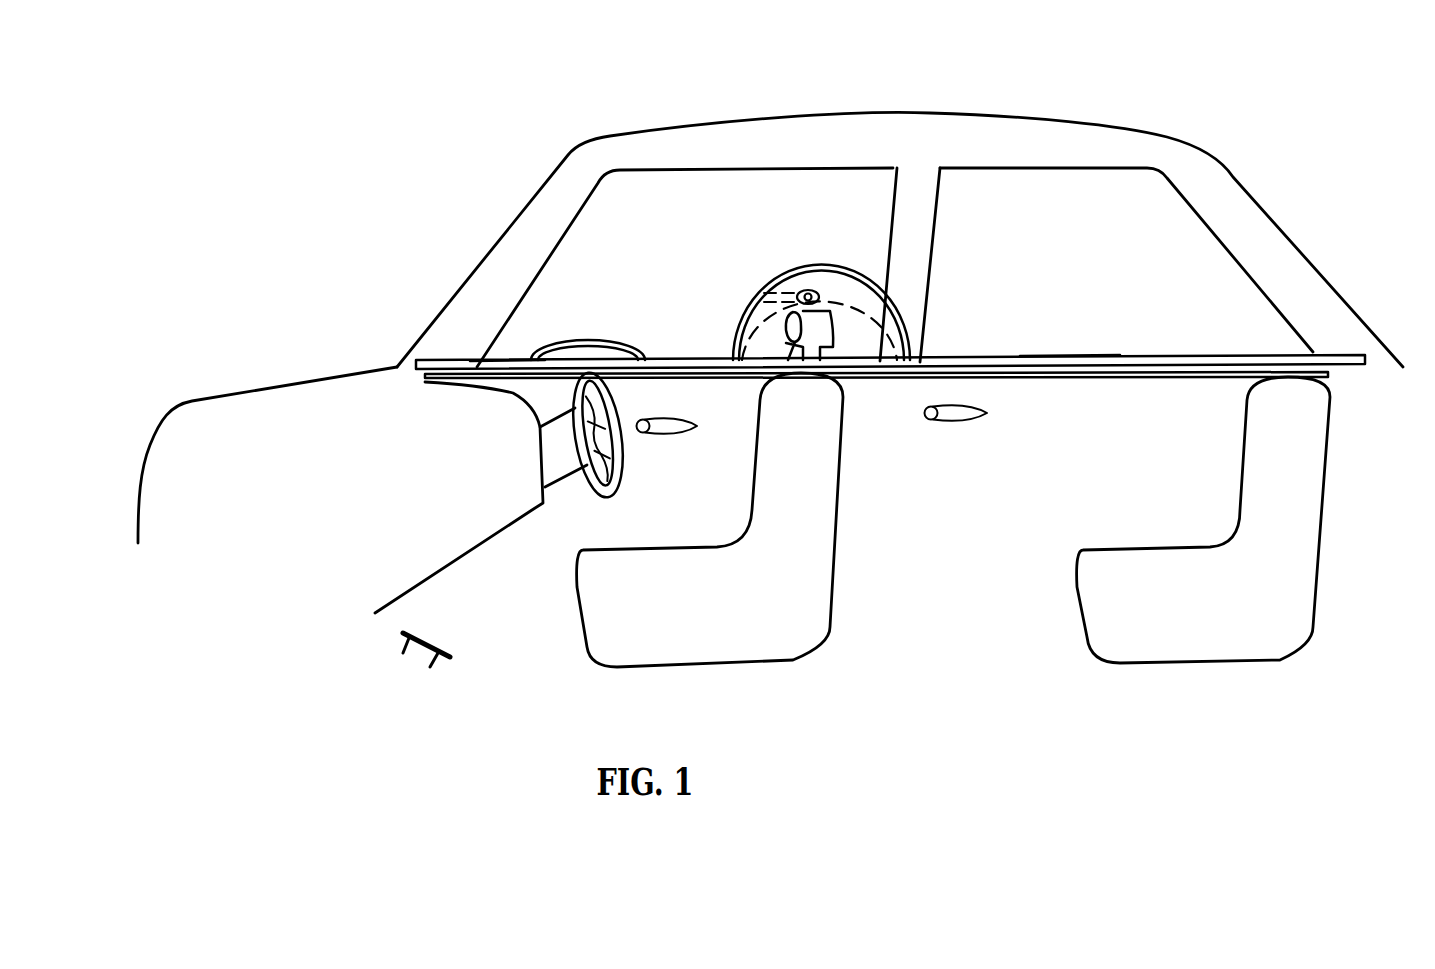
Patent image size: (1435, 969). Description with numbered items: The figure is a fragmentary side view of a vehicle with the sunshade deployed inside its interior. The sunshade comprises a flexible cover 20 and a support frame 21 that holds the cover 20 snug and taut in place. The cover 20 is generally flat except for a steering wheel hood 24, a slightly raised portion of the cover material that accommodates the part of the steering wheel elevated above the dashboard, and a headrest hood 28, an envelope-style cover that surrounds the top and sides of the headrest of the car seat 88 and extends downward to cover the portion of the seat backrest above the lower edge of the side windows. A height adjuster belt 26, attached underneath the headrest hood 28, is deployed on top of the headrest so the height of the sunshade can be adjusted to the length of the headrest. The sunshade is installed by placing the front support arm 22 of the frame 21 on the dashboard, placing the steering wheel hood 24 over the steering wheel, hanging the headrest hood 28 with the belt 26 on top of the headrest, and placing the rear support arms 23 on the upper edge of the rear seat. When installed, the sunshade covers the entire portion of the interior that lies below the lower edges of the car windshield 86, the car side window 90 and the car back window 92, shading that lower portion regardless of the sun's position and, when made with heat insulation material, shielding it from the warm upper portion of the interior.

The flexible cover 20 is at (420, 374).
The support frame 21 is at (707, 360).
The front support arm 22 is at (507, 362).
The rear support arm 23 is at (1068, 358).
The steering wheel hood 24 is at (577, 338).
The height adjuster belt 26 is at (811, 293).
The headrest hood 28 is at (780, 266).
The car windshield 86 is at (523, 213).
The car seat 88 is at (833, 627).
The car side window 90 is at (1207, 317).
The car back window 92 is at (1300, 250).